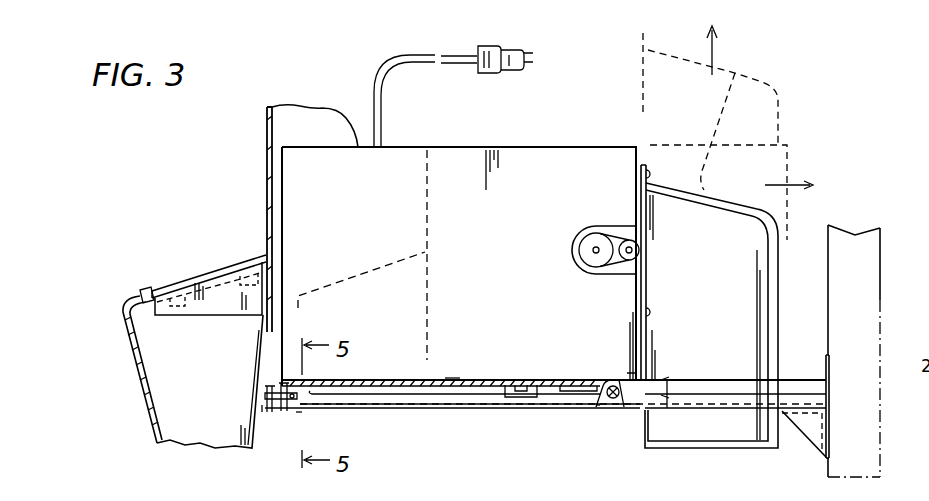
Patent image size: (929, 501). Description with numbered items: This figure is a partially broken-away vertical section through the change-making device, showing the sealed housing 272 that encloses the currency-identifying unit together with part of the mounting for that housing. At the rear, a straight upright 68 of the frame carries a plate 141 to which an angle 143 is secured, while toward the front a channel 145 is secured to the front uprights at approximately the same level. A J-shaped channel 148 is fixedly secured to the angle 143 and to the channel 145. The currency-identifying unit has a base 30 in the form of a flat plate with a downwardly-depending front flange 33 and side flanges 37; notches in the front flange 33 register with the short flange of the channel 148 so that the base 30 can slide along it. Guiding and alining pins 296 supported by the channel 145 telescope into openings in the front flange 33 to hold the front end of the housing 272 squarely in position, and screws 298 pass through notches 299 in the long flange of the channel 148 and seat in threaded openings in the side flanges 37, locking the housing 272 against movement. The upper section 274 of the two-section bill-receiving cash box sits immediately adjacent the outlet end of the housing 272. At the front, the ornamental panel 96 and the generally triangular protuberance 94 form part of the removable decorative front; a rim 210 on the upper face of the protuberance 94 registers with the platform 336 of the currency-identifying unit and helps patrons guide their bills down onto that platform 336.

The ornamental panel 96 is at (266, 167).
The sealed housing 272 is at (540, 160).
The upper section of bill-receiving cash box 274 is at (701, 193).
The side flanges 37 is at (456, 392).
The base 30 is at (445, 380).
The screws 298 is at (622, 406).
The notches 299 is at (614, 384).
The channel 148 is at (598, 406).
The guiding and alining pins 296 is at (290, 392).
The front flange 33 is at (299, 413).
The channel 145 is at (262, 406).
The plates 141 is at (826, 365).
The angle 143 is at (812, 448).
The upright 68 is at (855, 232).
The platform 336 is at (237, 261).
The rim 210 is at (150, 289).
The protuberance 94 is at (133, 378).